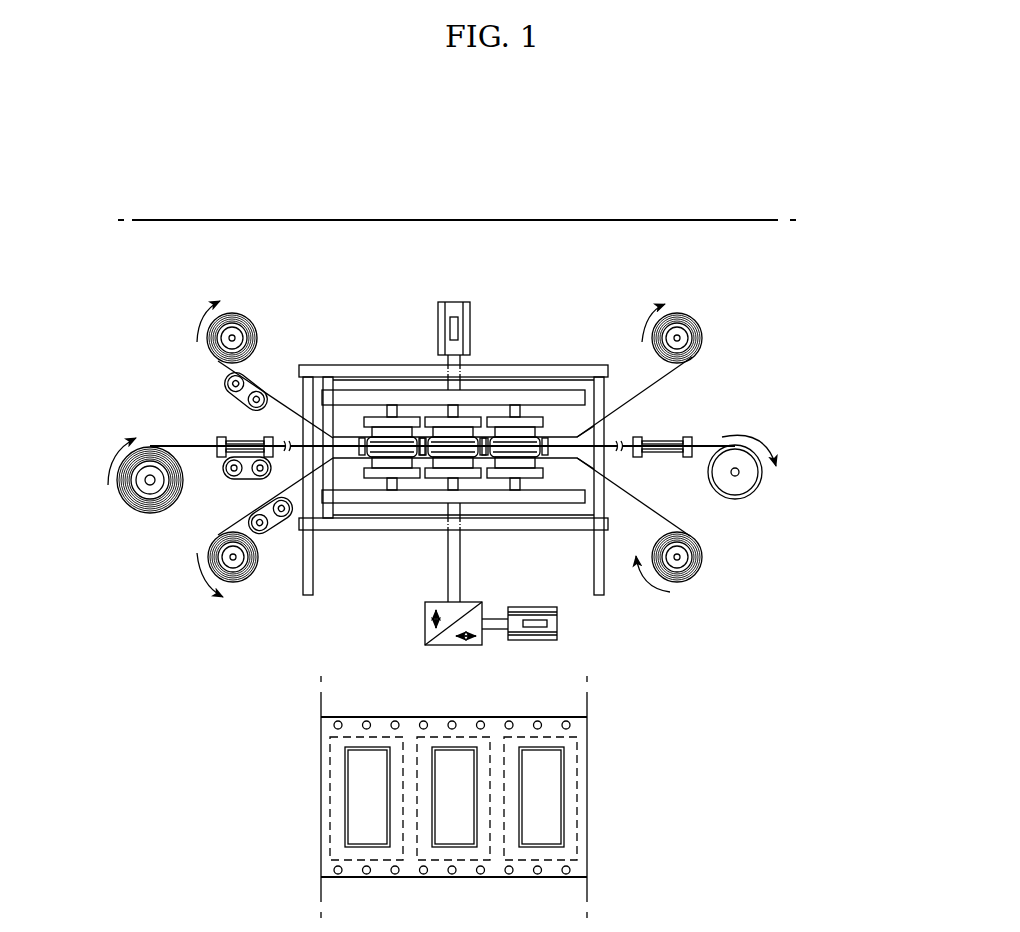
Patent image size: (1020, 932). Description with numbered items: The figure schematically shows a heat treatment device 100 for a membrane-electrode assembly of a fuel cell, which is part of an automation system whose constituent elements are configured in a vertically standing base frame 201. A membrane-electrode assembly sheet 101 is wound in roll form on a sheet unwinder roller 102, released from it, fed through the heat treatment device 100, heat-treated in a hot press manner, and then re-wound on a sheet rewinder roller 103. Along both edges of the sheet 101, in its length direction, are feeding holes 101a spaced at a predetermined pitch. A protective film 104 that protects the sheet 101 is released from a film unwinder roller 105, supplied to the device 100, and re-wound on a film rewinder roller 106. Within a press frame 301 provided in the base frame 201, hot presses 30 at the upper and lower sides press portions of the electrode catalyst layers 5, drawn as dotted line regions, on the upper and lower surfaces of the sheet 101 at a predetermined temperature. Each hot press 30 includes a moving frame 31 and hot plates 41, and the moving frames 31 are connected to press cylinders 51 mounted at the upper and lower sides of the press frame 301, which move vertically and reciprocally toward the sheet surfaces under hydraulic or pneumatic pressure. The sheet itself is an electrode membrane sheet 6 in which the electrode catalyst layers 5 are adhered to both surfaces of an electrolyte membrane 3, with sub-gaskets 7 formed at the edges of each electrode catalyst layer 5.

The heat treatment device 100 is at (498, 188).
The base frame 201 is at (242, 220).
The press frame 301 is at (583, 352).
The hot presses 30 is at (333, 412).
The moving frames 31 is at (492, 392).
The hot plates 41 is at (373, 472).
The press cylinders 51 is at (453, 302).
The membrane-electrode assembly sheet 101 is at (165, 445).
The feeding holes 101a is at (394, 718).
The sheet unwinder roller 102 is at (143, 500).
The sheet rewinder roller 103 is at (740, 487).
The protective film 104 is at (270, 392).
The film unwinder roller 105 is at (222, 556).
The film rewinder roller 106 is at (684, 575).
The sub-gaskets 7 is at (337, 741).
The electrode membrane sheet 6 is at (401, 798).
The electrode catalyst layers 5 is at (360, 793).
The electrolyte membrane 3 is at (345, 828).